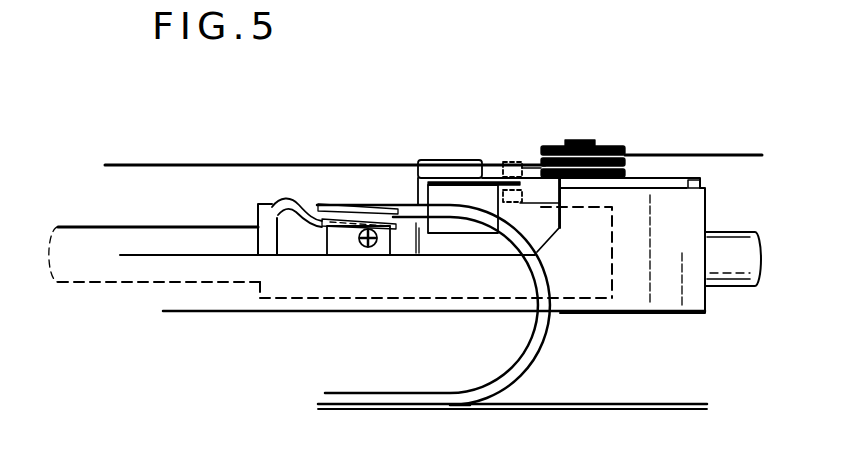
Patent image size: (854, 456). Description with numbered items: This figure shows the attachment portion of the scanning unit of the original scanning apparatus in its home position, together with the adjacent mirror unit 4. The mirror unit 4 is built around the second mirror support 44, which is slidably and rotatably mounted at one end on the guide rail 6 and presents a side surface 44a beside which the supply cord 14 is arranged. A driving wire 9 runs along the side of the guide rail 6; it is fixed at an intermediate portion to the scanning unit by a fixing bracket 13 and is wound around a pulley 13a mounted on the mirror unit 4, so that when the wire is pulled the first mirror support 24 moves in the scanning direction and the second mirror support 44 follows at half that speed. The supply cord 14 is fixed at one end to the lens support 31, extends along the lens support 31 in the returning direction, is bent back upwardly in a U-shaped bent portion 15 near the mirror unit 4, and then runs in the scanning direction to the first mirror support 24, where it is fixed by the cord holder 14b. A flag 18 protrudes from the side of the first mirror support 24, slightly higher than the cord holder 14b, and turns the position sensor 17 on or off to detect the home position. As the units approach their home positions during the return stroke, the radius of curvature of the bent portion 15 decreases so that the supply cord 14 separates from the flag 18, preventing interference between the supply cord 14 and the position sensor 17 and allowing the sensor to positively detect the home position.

The mirror unit 4 is at (712, 184).
The guide rail 6 is at (745, 287).
The driving wire 9 is at (341, 163).
The fixing bracket 13 is at (443, 161).
The pulley 13a is at (608, 146).
The supply cord 14 is at (410, 407).
The cord holder 14b is at (342, 245).
The bent portion 15 is at (538, 345).
The position sensor 17 is at (517, 162).
The flag 18 is at (477, 178).
The first mirror support 24 is at (272, 207).
The lens support 31 is at (657, 410).
The second mirror support 44 is at (688, 227).
The side surface 44a is at (588, 282).